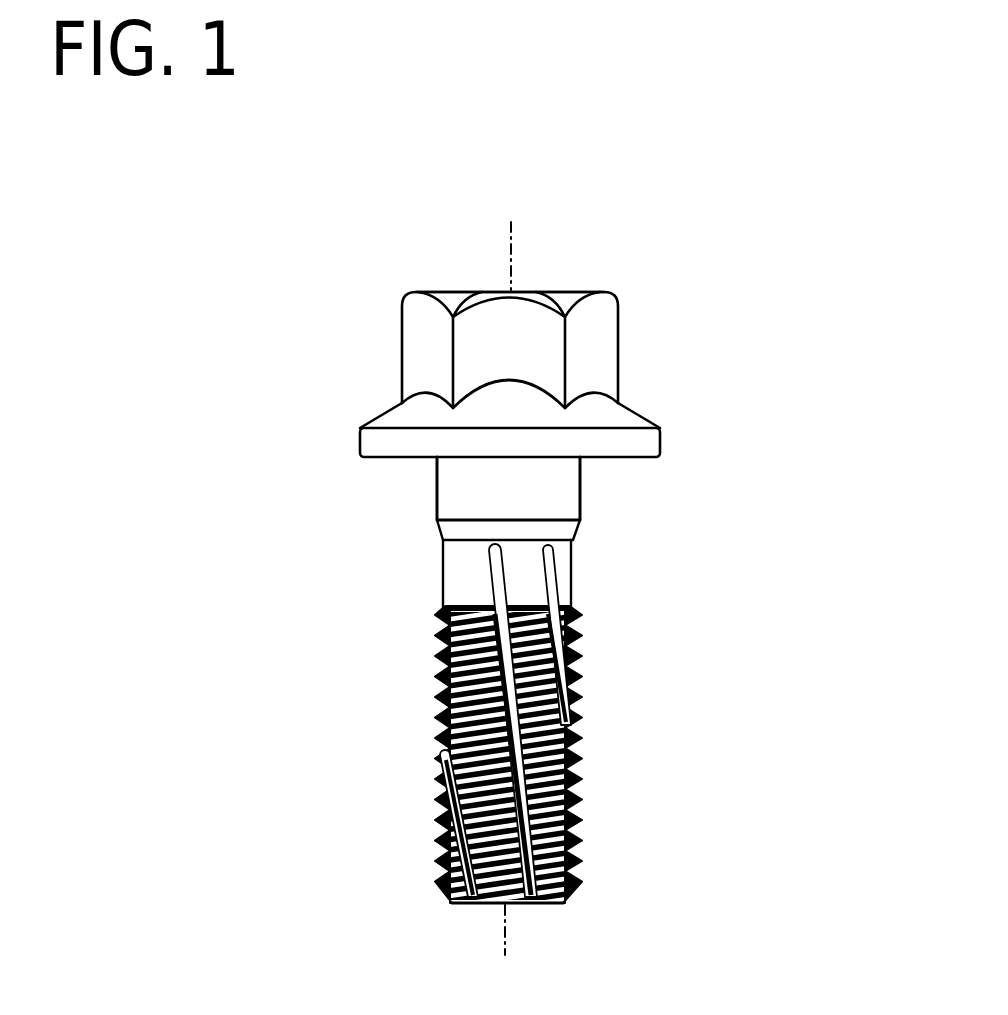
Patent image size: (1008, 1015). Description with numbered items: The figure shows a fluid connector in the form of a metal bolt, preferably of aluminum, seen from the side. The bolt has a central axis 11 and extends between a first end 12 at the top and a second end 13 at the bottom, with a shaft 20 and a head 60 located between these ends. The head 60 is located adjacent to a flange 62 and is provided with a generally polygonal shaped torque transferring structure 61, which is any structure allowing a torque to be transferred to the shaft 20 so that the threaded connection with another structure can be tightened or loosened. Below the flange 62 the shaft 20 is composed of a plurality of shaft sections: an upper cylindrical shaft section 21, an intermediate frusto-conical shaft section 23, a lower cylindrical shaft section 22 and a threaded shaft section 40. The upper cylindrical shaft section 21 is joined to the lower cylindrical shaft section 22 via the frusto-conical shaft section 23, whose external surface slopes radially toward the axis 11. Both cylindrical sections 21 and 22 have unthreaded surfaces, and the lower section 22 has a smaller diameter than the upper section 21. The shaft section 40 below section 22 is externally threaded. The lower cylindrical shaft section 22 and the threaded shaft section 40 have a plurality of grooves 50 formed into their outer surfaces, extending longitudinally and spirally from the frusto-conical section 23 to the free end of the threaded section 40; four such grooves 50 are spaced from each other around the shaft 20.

The axis 11 is at (512, 260).
The first end 12 is at (357, 300).
The second end 13 is at (600, 898).
The shaft 20 is at (476, 740).
The upper cylindrical shaft section 21 is at (467, 490).
The lower cylindrical shaft section 22 is at (457, 575).
The intermediate frusto-conical shaft section 23 is at (462, 526).
The threaded shaft section 40 is at (418, 740).
The grooves 50 is at (490, 580).
The head 60 is at (668, 337).
The torque transferring structure 61 is at (593, 350).
The flange 62 is at (652, 427).